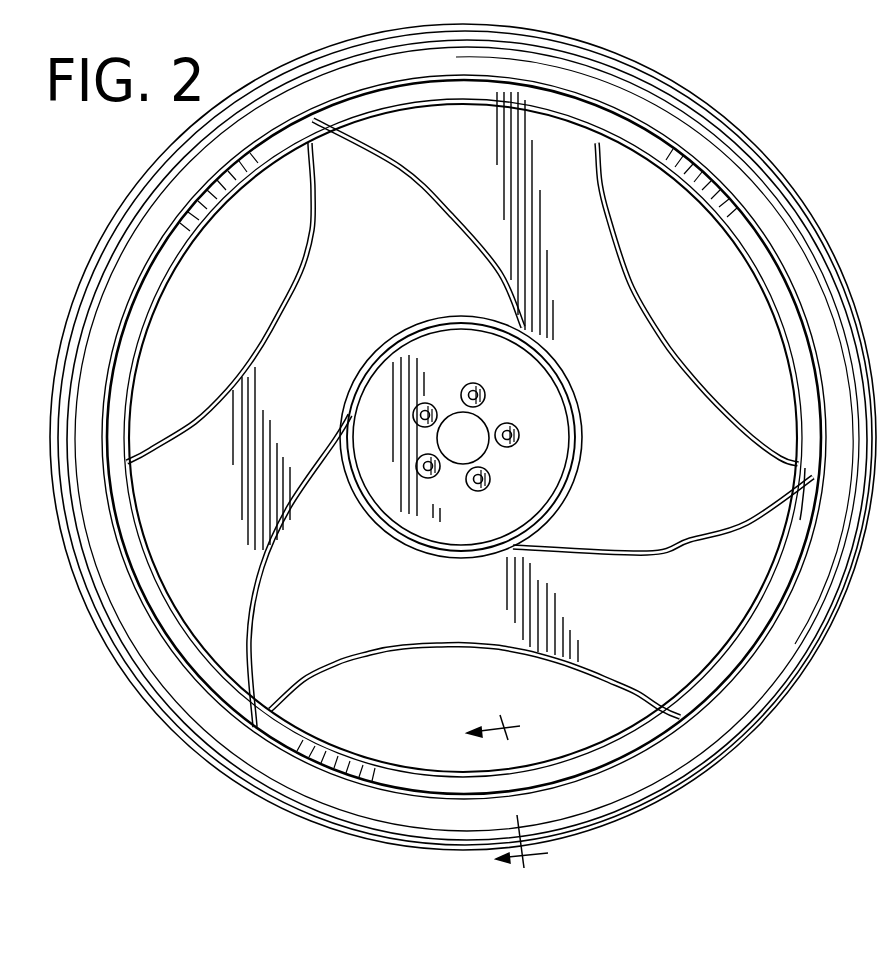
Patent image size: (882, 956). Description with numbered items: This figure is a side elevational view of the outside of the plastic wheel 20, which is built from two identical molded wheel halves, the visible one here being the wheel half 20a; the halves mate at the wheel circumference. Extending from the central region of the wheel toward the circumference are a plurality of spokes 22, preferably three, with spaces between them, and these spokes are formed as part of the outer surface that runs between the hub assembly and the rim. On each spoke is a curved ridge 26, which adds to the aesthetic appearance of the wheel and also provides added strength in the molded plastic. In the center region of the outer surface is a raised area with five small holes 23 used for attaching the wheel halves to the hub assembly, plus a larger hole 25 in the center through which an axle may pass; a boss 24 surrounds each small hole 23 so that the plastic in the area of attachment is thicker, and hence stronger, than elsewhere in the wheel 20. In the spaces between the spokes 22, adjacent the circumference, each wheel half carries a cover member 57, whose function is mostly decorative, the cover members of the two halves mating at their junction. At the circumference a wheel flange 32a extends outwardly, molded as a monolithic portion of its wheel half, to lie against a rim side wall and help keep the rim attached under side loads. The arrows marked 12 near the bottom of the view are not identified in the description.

The plastic wheel 20 is at (463, 437).
The wheel half 20a is at (213, 635).
The spokes 22 is at (490, 143).
The curved ridges 26 is at (413, 173).
The cover member 57 is at (167, 258).
The wheel flange 32a is at (830, 503).
The larger hole 25 is at (470, 428).
The small holes 23 is at (516, 433).
The boss 24 is at (508, 447).
The rotational axis direction 12 is at (526, 789).